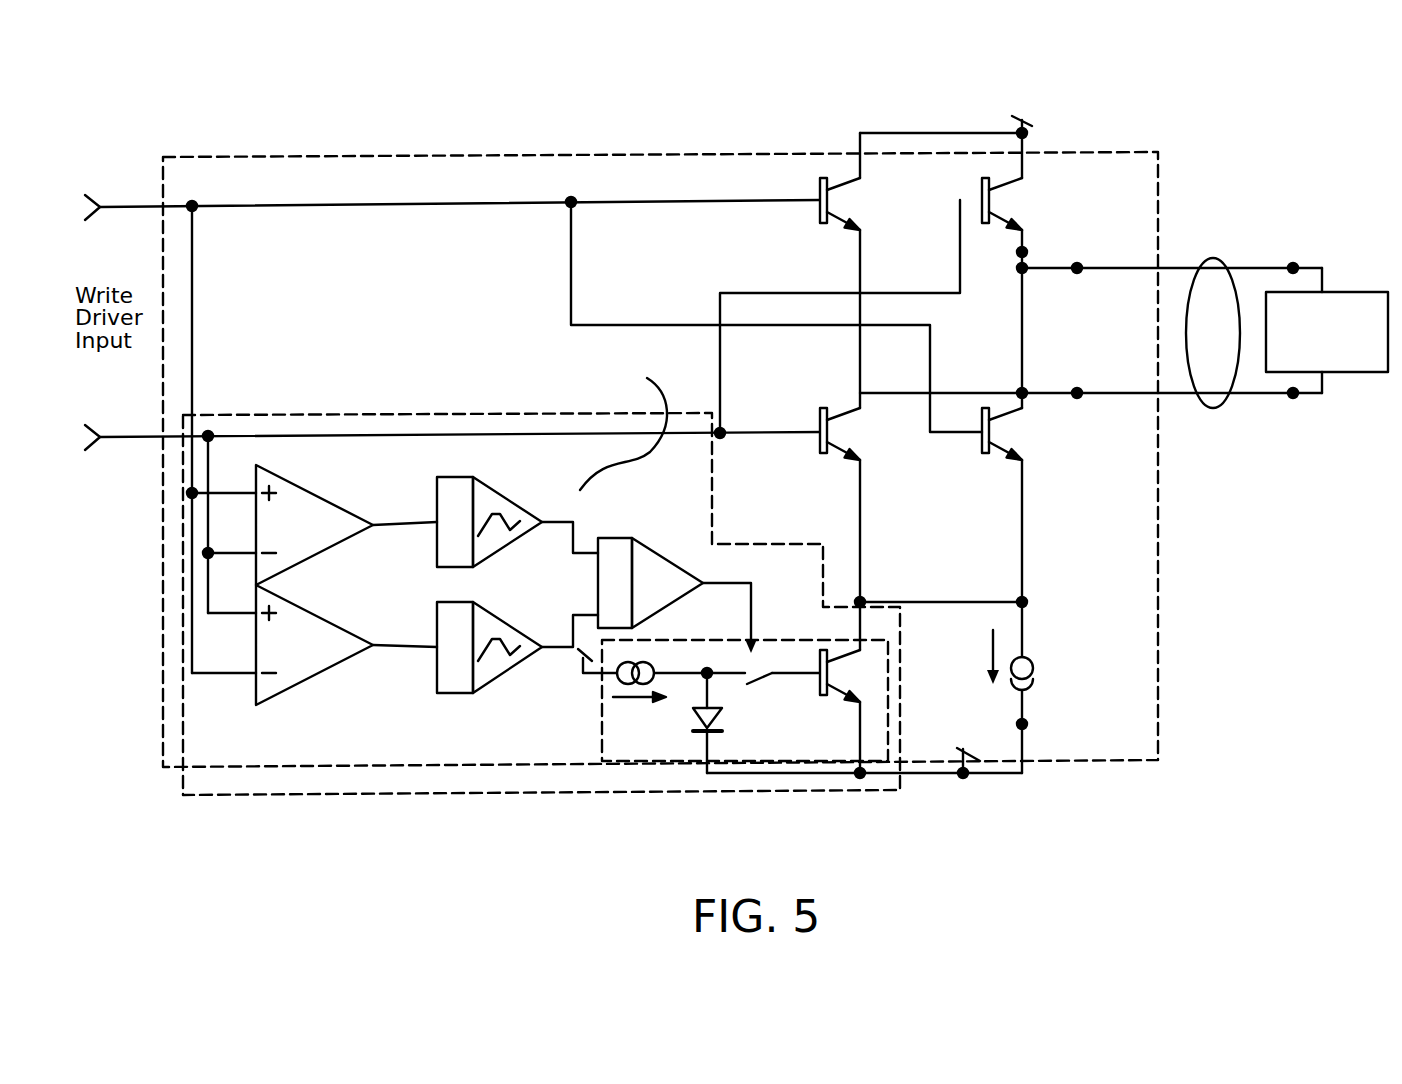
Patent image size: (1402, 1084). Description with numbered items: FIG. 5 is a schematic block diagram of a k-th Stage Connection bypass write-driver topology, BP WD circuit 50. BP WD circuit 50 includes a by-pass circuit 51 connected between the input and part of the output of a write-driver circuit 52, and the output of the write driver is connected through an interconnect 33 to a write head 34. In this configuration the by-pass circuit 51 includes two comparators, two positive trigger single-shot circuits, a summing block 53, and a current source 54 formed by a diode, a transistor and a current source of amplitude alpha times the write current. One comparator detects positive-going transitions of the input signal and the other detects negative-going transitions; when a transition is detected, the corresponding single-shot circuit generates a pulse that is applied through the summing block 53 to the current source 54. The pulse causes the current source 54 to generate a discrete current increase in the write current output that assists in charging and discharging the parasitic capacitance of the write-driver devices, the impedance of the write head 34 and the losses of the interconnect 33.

The interconnect 33 is at (1213, 410).
The write head 34 is at (1347, 372).
The k-th Stage Connection BP WD circuit 50 is at (1159, 707).
The by-pass circuit 51 is at (541, 500).
The write-driver circuit 52 is at (299, 326).
The summing block 53 is at (657, 557).
The current source 54 is at (795, 637).